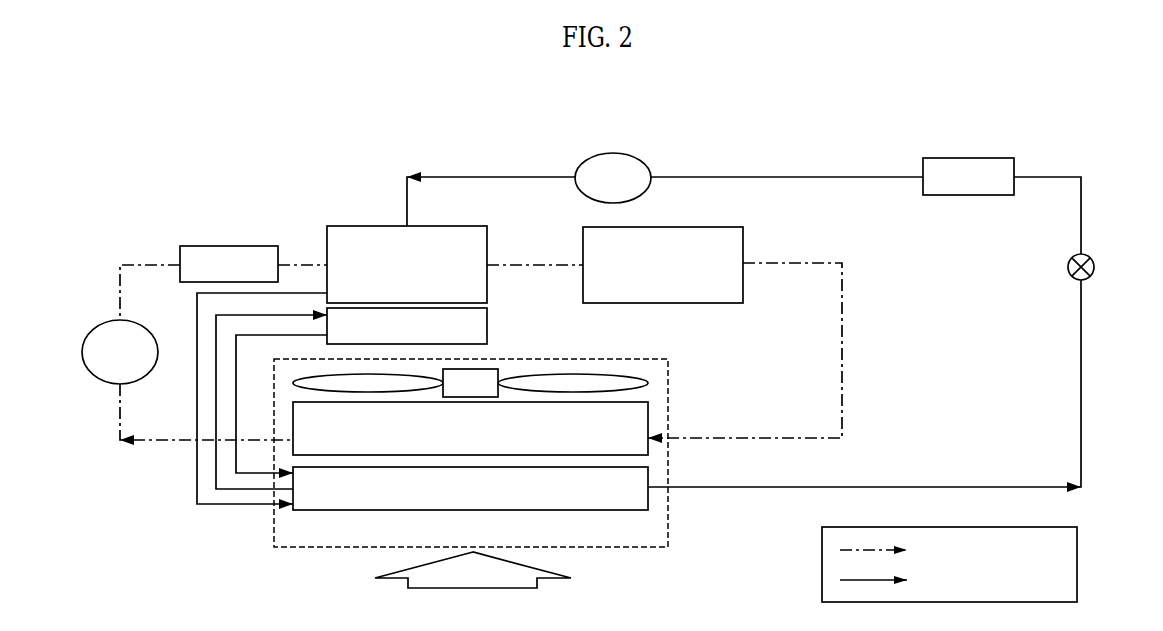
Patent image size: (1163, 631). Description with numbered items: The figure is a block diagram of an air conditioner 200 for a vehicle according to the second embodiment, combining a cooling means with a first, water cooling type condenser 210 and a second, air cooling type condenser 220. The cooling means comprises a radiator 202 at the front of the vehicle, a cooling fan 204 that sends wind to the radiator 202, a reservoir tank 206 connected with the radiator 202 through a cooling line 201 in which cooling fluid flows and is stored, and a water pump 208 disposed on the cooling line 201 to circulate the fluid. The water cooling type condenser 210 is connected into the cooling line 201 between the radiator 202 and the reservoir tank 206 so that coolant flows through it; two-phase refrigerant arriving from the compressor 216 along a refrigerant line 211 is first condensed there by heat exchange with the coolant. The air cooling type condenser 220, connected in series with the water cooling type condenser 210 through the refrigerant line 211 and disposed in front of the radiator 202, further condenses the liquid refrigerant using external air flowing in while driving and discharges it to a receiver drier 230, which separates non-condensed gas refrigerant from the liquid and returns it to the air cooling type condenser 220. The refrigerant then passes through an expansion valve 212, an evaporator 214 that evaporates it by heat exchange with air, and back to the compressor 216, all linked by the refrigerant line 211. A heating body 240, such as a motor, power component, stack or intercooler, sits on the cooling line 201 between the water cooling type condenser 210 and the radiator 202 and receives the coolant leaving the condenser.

The air conditioner 200 is at (631, 85).
The cooling line 201 is at (120, 280).
The radiator 202 is at (650, 417).
The cooling fan 204 is at (587, 373).
The reservoir tank 206 is at (228, 246).
The water pump 208 is at (148, 373).
The water cooling type condenser 210 is at (355, 226).
The refrigerant line 211 is at (792, 176).
The expansion valve 212 is at (1095, 267).
The evaporator 214 is at (965, 158).
The compressor 216 is at (610, 153).
The air cooling type condenser 220 is at (650, 500).
The receiver drier 230 is at (487, 322).
The heating body 240 is at (743, 242).